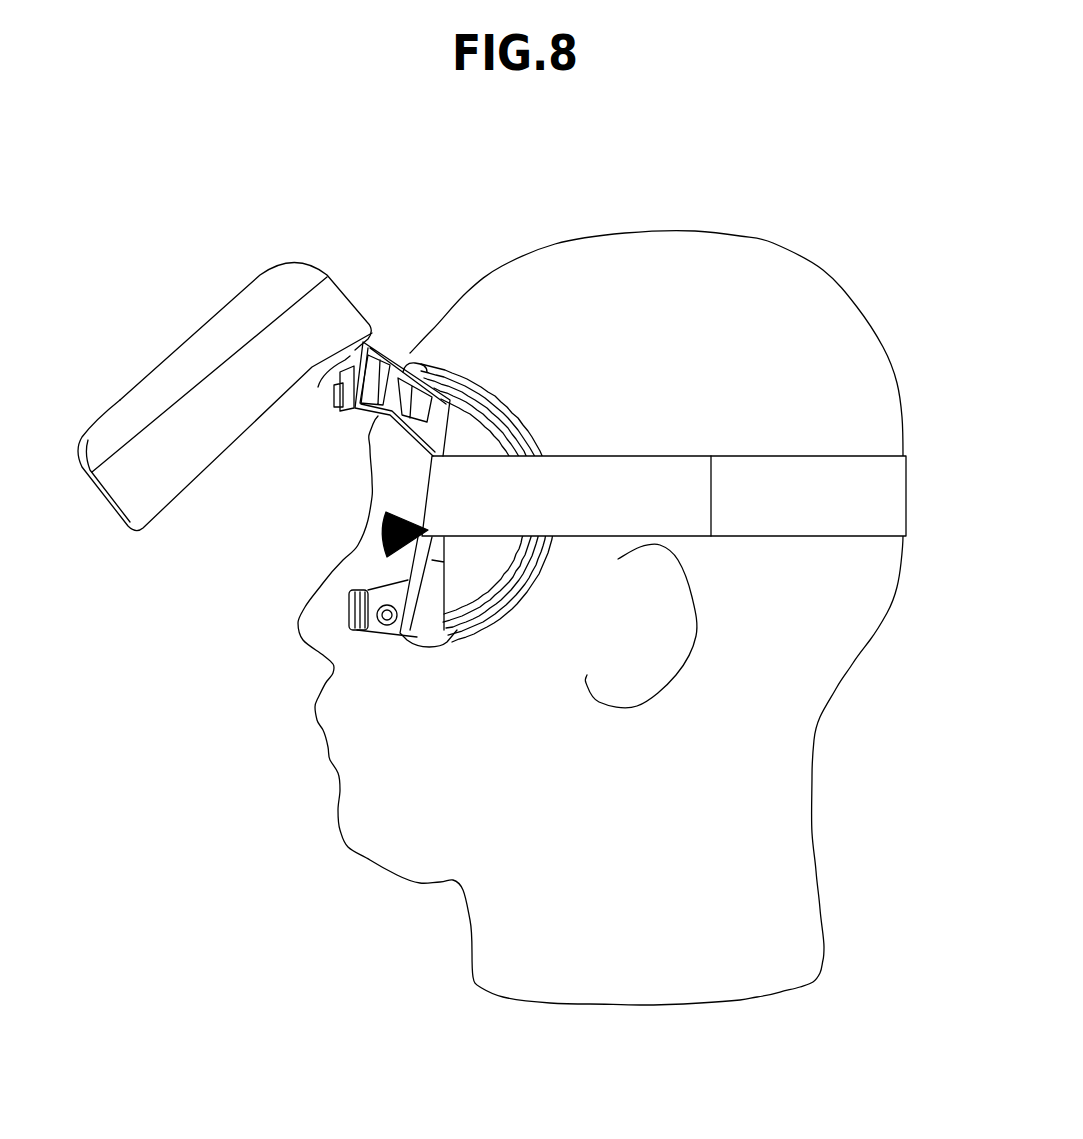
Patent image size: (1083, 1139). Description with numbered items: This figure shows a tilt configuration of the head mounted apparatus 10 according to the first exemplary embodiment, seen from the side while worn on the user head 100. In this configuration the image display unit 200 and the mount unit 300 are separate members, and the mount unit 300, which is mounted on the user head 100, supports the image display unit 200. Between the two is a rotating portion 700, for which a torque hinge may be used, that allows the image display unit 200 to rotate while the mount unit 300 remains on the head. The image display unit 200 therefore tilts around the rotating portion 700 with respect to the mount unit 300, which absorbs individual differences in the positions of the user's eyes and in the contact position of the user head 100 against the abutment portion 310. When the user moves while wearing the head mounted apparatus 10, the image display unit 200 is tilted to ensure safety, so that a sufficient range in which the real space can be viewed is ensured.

The head mounted apparatus 10 is at (104, 368).
The user head 100 is at (903, 410).
The image display unit 200 is at (200, 332).
The mount unit 300 is at (631, 409).
The abutment portion 310 is at (474, 358).
The rotating portion 700 is at (346, 410).